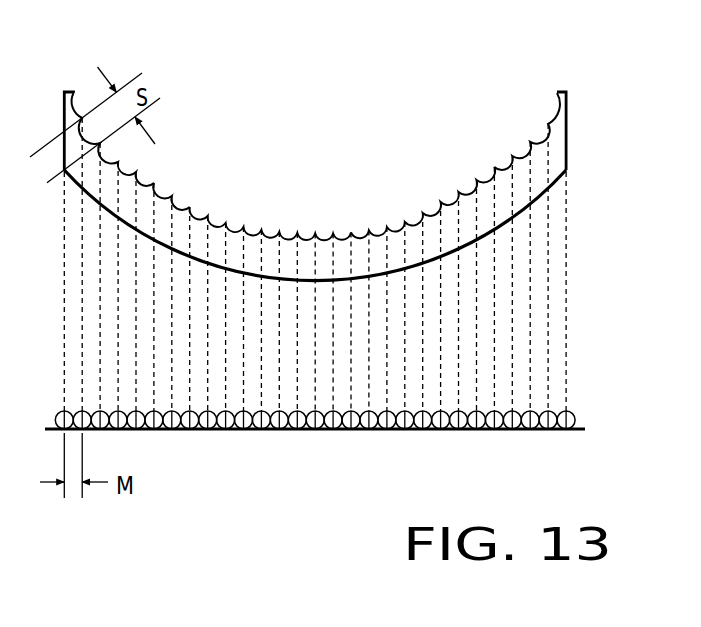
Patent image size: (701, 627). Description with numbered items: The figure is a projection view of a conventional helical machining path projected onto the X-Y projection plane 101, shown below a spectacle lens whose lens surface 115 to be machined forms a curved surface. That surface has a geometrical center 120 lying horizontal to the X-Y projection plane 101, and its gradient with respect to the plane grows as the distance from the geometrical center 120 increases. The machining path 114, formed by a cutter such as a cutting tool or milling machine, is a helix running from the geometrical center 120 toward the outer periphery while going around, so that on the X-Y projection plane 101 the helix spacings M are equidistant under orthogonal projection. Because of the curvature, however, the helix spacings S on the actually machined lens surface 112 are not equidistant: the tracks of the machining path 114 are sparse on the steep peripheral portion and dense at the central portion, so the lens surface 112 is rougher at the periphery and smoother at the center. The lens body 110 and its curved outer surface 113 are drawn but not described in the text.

The X-Y projection plane 101 is at (581, 428).
The lens array body 110 is at (471, 108).
The actually machined lens surface 112 is at (352, 232).
The curved outer surface 113 is at (410, 268).
The machining path 114 is at (173, 195).
The lens surface to be machined 115 is at (81, 95).
The geometrical center 120 is at (315, 237).